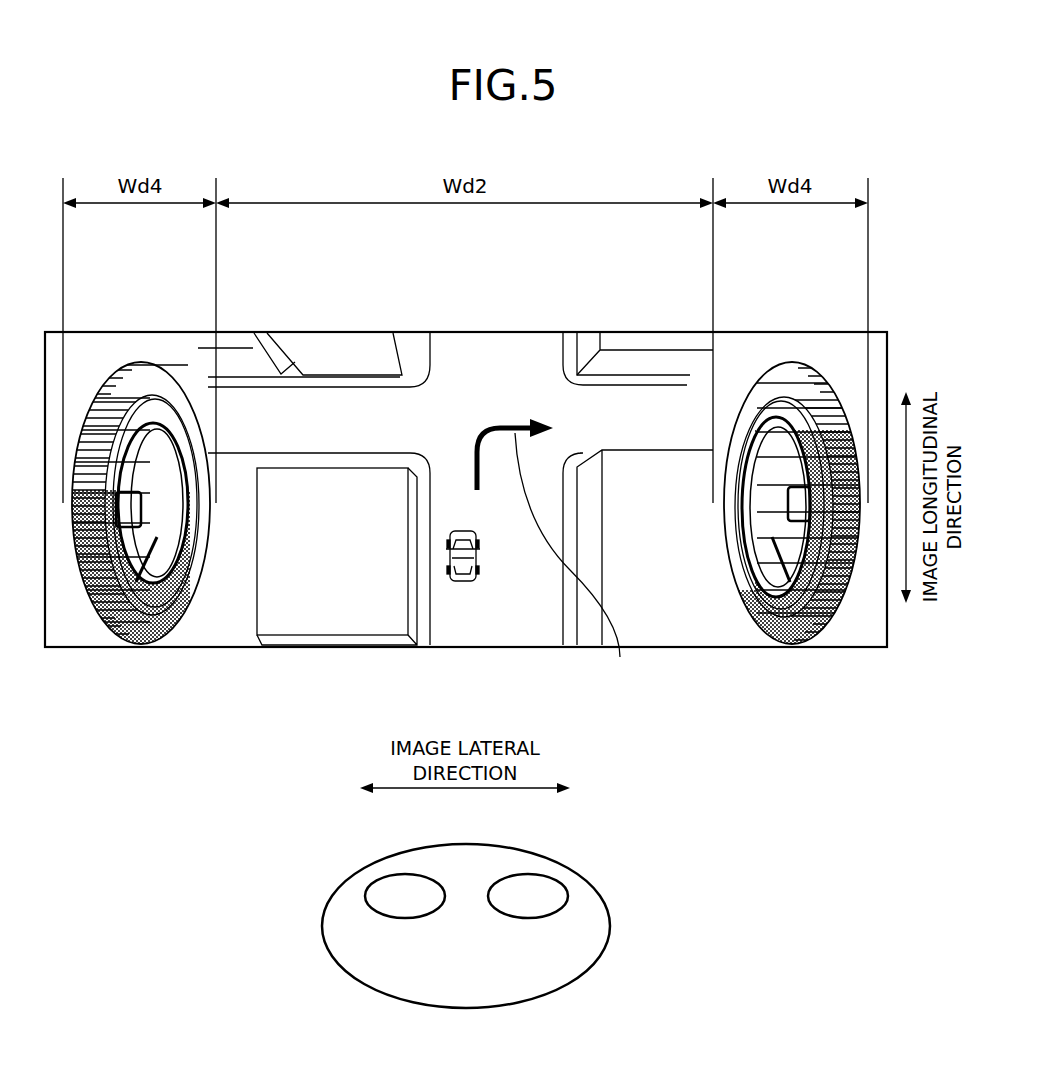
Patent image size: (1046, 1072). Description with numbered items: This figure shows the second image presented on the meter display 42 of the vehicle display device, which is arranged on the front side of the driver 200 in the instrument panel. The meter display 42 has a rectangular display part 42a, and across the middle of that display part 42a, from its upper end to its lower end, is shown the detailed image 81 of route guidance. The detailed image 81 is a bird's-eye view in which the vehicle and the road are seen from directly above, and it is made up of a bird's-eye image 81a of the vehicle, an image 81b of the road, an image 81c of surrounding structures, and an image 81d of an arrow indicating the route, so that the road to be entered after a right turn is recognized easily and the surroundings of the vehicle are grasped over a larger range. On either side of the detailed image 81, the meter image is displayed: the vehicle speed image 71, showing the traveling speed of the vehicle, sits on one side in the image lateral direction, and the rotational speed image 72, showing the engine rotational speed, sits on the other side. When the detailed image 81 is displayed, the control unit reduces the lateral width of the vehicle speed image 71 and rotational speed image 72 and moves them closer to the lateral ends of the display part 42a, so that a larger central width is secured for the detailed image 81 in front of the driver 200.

The meter display 42 is at (505, 312).
The display part 42a is at (443, 352).
The detailed image 81 is at (555, 360).
The bird's-eye image of the vehicle 81a is at (463, 585).
The image of a road 81b is at (527, 558).
The image of surrounding structures 81c is at (318, 603).
The image of an arrow 81d is at (576, 570).
The vehicle speed image 71 is at (152, 655).
The rotational speed image 72 is at (775, 655).
The driver 200 is at (610, 922).